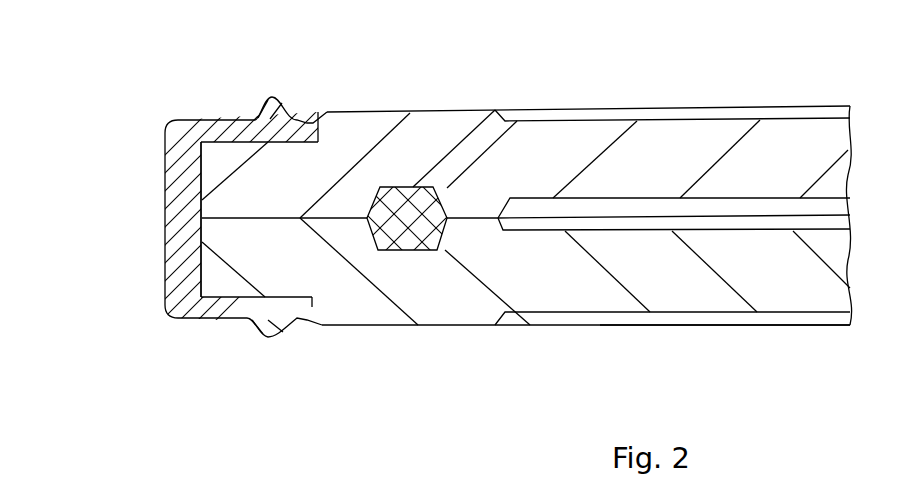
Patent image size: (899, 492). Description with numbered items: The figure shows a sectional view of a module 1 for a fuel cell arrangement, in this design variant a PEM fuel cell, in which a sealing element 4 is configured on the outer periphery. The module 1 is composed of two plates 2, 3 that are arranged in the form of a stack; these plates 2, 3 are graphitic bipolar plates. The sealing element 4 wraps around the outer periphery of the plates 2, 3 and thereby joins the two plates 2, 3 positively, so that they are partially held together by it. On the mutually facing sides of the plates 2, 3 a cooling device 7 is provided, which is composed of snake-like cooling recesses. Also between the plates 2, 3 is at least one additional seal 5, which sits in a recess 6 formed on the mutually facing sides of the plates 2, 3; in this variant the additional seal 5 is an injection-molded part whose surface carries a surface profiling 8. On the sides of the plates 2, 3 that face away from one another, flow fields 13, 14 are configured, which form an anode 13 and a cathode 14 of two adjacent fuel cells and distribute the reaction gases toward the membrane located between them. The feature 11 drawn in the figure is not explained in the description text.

The module 1 is at (100, 352).
The plate 2 is at (430, 133).
The plate 3 is at (453, 305).
The sealing element 4 is at (178, 133).
The additional seal 5 is at (540, 121).
The recess 6 is at (400, 188).
The cooling device 7 is at (750, 200).
The surface profiling 8 is at (497, 110).
The sealing bead 11 is at (272, 97).
The anode 13 is at (675, 118).
The cathode 14 is at (738, 315).